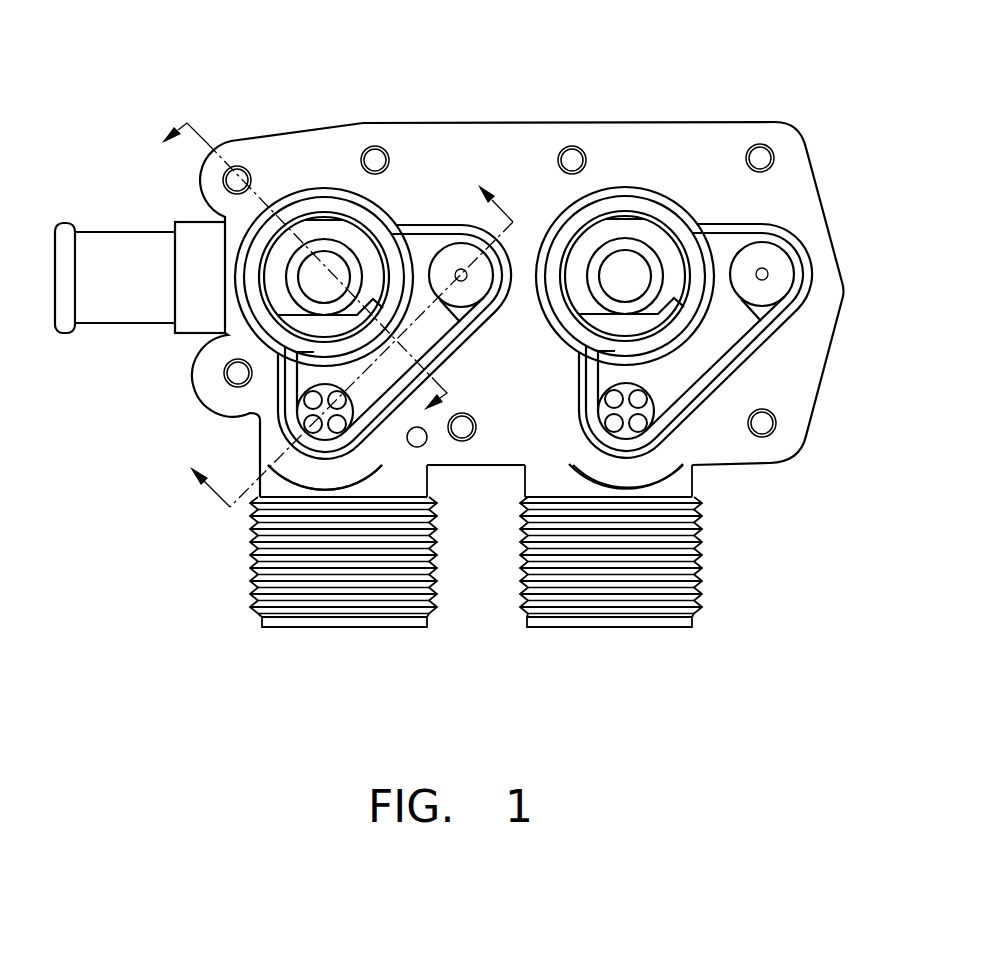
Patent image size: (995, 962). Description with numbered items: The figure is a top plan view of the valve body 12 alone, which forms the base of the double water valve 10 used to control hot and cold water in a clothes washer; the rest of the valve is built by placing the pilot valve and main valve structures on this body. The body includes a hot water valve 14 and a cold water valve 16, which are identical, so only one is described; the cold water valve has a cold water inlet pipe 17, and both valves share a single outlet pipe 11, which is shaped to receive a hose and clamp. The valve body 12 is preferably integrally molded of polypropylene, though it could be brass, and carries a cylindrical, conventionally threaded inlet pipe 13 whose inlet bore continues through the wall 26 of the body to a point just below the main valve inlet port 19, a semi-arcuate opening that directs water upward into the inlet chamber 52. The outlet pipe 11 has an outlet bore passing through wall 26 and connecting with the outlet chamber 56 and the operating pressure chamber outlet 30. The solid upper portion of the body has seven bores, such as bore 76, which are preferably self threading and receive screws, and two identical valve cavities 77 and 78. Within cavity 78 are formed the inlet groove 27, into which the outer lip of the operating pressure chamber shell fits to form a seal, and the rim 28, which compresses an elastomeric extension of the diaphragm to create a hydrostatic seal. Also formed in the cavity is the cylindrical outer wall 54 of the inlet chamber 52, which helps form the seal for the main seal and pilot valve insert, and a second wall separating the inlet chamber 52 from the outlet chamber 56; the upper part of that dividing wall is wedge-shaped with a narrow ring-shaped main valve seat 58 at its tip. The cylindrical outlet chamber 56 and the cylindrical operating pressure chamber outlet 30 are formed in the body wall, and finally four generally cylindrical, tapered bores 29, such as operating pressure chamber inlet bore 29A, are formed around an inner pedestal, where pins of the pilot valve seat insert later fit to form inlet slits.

The water valve 10 is at (474, 85).
The outlet pipe 11 is at (98, 243).
The valve body 12 is at (518, 279).
The inlet pipe 13 is at (253, 583).
The hot water valve 14 is at (105, 430).
The cold water valve 16 is at (832, 442).
The cold water inlet pipe 17 is at (702, 590).
The main valve inlet port 19 is at (317, 327).
The wall 26 is at (267, 425).
The inlet groove 27 is at (457, 352).
The rim 28 is at (330, 205).
The bores 29 is at (367, 443).
The operating pressure chamber inlet bore 29A is at (345, 455).
The operating pressure chamber outlet 30 is at (463, 280).
The inlet chamber 52 is at (363, 250).
The outer wall of inlet chamber 54 is at (257, 283).
The outlet chamber 56 is at (297, 247).
The main valve seat 58 is at (300, 273).
The screw bore 76 is at (585, 148).
The valve cavity 77 is at (668, 193).
The valve cavity 78 is at (316, 188).